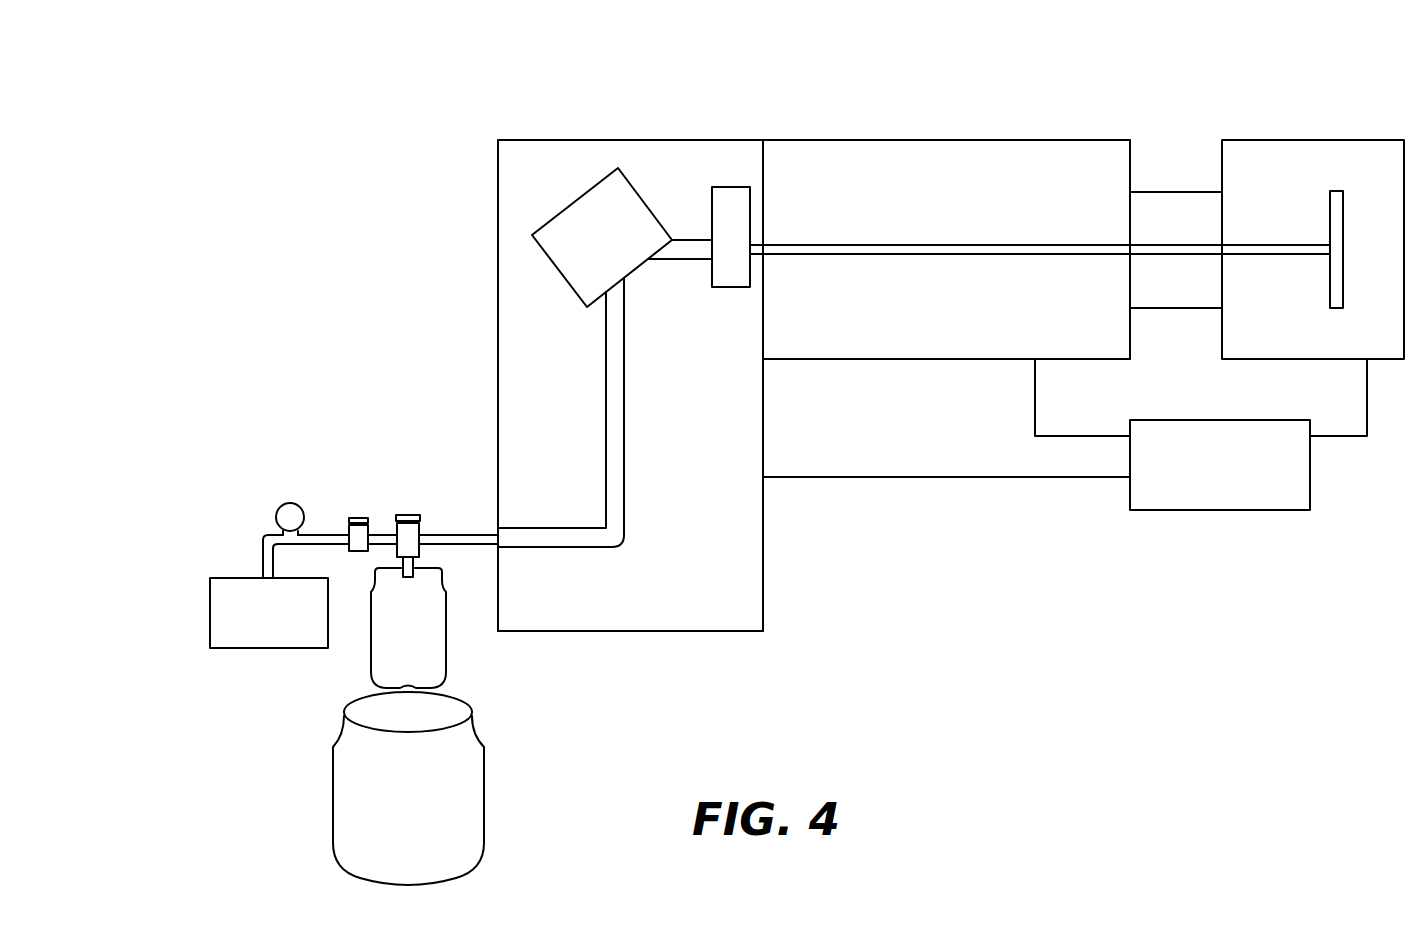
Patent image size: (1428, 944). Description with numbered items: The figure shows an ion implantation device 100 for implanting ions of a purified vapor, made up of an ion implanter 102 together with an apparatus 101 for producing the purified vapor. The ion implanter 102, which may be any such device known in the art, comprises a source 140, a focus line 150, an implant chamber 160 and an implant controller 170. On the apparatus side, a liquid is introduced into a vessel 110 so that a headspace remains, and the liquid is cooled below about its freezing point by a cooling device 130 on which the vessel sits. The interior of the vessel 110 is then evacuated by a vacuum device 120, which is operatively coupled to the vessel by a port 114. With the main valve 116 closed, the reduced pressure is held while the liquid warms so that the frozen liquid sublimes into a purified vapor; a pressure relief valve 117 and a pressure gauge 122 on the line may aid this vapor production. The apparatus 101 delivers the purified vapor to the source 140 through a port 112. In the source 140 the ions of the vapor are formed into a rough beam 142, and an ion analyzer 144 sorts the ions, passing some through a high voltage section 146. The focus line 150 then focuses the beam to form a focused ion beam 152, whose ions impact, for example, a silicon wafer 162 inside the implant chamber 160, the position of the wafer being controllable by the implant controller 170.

The ion implantation device 100 is at (532, 127).
The apparatus for producing a purified vapor 101 is at (251, 315).
The ion implanter 102 is at (1048, 115).
The vessel 110 is at (433, 660).
The port 112 is at (445, 535).
The port 114 is at (332, 535).
The main valve 116 is at (408, 515).
The pressure relief valve 117 is at (358, 518).
The vacuum device 120 is at (220, 613).
The pressure gauge 122 is at (290, 518).
The cooling device 130 is at (472, 803).
The source 140 is at (755, 590).
The rough beam 142 is at (615, 516).
The ion analyzer 144 is at (562, 226).
The high voltage section 146 is at (730, 202).
The focus line 150 is at (852, 140).
The focused ion beam 152 is at (1037, 250).
The implant chamber 160 is at (1361, 140).
The silicon wafer 162 is at (1335, 220).
The implant controller 170 is at (1243, 480).